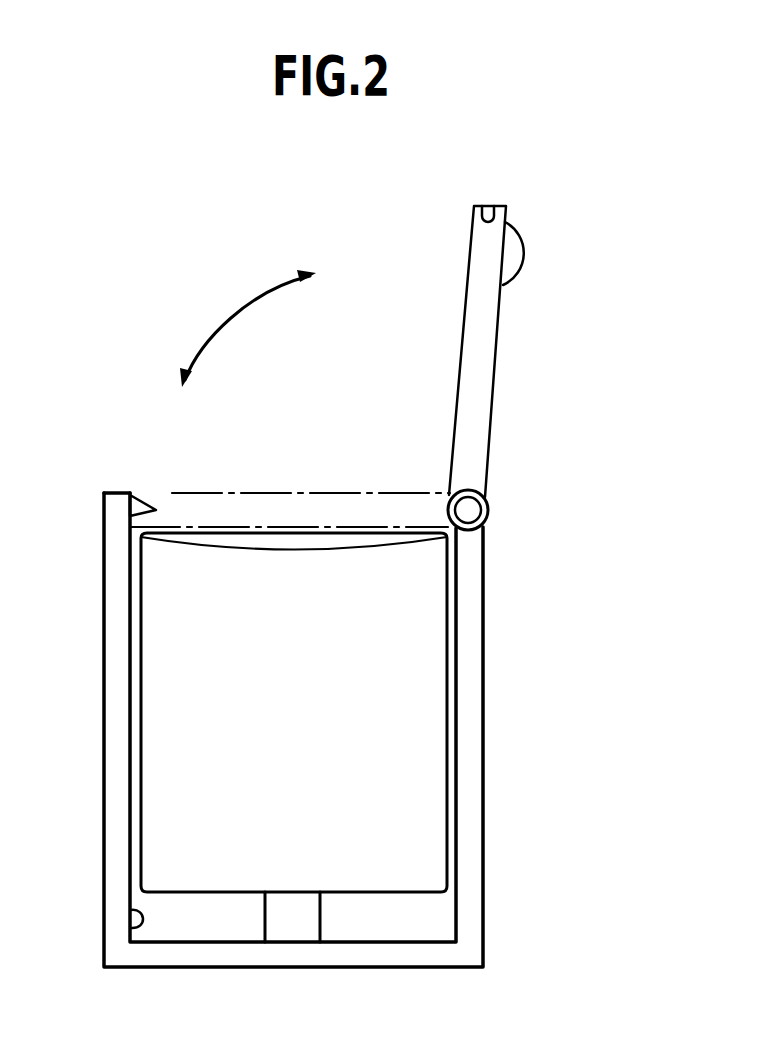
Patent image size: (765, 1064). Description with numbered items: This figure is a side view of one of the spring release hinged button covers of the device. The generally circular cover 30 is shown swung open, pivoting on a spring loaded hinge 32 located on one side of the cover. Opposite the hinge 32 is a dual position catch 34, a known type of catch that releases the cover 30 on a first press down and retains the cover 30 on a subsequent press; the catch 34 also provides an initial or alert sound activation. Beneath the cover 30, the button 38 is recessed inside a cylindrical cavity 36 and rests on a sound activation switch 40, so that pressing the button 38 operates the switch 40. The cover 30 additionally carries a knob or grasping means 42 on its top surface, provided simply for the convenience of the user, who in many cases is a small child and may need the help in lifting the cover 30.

The hinged cover 30 is at (484, 346).
The spring loaded hinge 32 is at (514, 548).
The dual position catch 34 is at (137, 497).
The cylindrical cavity 36 is at (133, 932).
The button 38 is at (162, 632).
The sound activation switch 40 is at (297, 917).
The knob or grasping means 42 is at (517, 237).